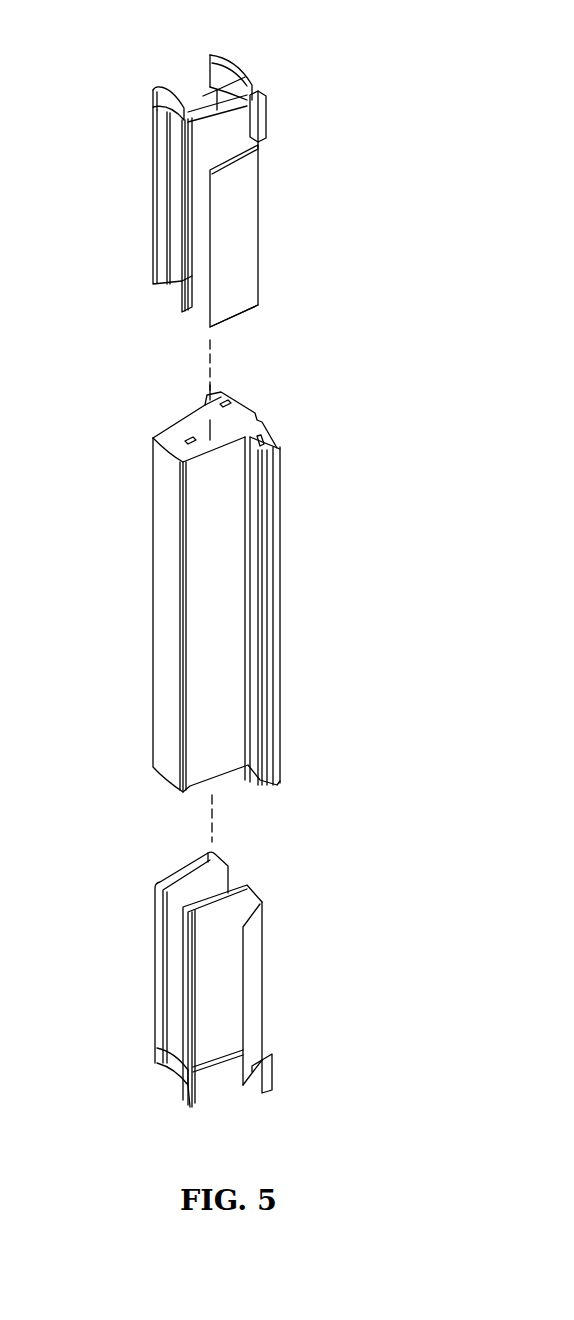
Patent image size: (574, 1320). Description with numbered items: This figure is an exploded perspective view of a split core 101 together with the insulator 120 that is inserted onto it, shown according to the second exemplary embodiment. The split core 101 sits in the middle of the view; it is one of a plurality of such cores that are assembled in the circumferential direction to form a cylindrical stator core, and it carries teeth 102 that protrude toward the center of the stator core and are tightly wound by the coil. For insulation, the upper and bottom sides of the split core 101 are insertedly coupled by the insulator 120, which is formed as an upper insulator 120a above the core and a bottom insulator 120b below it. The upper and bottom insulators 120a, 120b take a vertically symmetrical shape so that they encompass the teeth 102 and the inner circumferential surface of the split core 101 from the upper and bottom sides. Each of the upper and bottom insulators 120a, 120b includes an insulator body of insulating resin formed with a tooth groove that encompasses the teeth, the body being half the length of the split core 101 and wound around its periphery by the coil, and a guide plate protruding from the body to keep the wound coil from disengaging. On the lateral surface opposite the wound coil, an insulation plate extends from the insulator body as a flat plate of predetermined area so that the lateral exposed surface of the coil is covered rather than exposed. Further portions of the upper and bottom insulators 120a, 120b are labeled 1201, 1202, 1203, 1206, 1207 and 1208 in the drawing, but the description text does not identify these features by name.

The upper insulator 120a is at (245, 63).
The bottom insulator 120b is at (263, 882).
The insulator 120 is at (272, 1078).
The bent connector plate 1201 is at (218, 115).
The side plate bottom edge 1202 is at (200, 252).
The right plate bottom edge 1203 is at (253, 286).
The lower flange 1206 is at (180, 1053).
The bottom strip 1207 is at (216, 1042).
The right plate lower edge 1208 is at (260, 1020).
The split core 101 is at (270, 535).
The teeth 102 is at (240, 436).